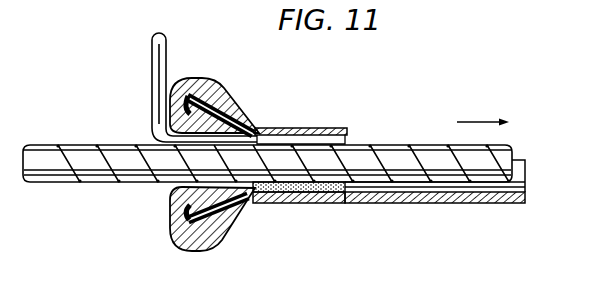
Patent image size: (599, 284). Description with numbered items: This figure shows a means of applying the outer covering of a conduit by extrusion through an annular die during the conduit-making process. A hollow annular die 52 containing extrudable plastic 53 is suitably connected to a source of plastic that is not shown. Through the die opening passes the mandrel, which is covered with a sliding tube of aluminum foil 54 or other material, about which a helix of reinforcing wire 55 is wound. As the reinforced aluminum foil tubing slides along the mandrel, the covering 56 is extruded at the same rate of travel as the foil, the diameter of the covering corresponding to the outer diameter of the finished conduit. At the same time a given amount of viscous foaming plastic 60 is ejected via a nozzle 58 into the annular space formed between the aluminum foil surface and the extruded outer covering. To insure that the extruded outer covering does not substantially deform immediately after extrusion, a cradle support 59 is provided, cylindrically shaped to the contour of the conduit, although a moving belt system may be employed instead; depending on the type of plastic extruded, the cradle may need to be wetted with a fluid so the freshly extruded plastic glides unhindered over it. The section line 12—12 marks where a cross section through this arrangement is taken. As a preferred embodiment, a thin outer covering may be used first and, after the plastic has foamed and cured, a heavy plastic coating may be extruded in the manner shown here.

The hollow annular die 52 is at (236, 107).
The extrudable plastic 53 is at (214, 91).
The sliding tube of aluminum foil 54 is at (100, 184).
The helix of reinforcing wire 55 is at (128, 155).
The covering 56 is at (350, 131).
The nozzle 58 is at (153, 61).
The cradle support 59 is at (468, 205).
The viscous foaming plastic 60 is at (250, 201).
The section line 12— 12 is at (280, 92).